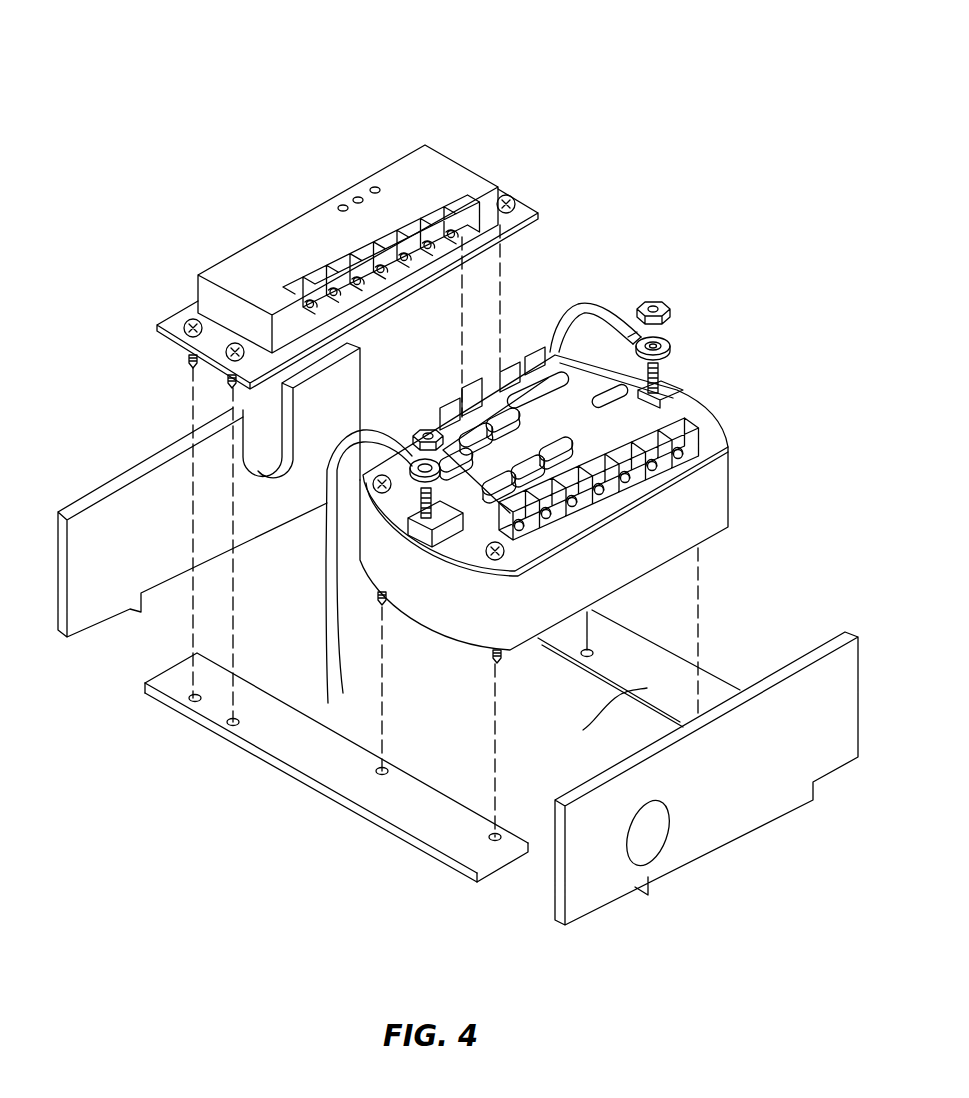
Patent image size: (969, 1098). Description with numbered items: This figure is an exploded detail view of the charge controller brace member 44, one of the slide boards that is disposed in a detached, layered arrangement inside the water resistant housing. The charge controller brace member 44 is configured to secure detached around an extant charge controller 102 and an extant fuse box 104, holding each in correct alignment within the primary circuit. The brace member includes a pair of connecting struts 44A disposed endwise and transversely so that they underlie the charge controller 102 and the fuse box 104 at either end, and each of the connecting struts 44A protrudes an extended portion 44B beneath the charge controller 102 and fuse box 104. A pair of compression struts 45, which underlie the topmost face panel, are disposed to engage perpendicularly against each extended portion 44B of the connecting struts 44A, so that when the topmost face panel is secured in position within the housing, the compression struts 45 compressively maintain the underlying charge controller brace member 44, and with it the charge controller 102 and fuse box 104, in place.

The charge controller brace member 44 is at (694, 168).
The connecting struts 44A is at (393, 820).
The extended portion 44B is at (156, 680).
The compression struts 45 is at (123, 513).
The charge controller 102 is at (302, 226).
The fuse box 104 is at (718, 490).